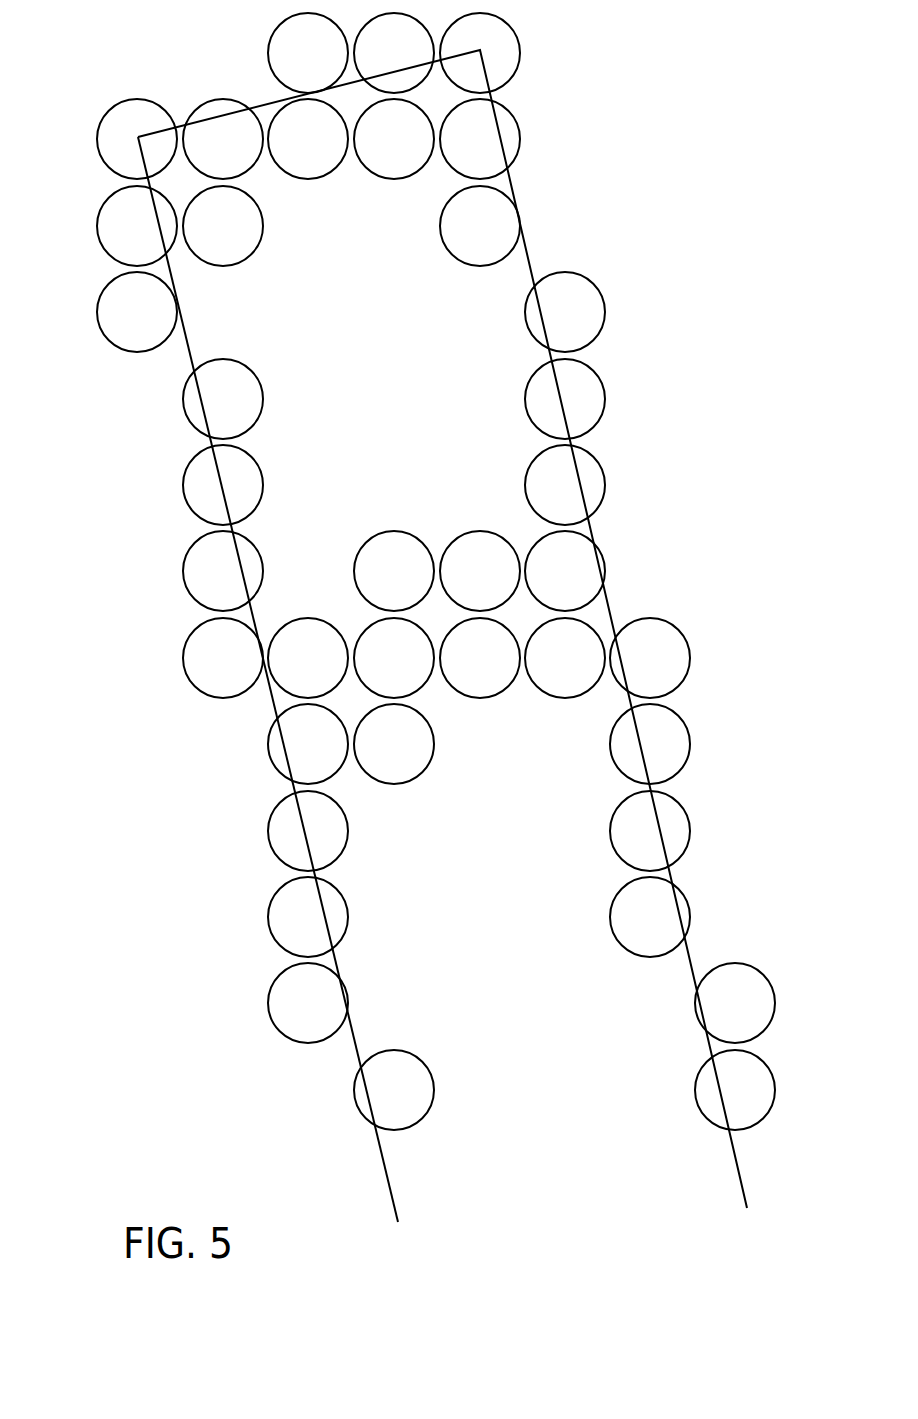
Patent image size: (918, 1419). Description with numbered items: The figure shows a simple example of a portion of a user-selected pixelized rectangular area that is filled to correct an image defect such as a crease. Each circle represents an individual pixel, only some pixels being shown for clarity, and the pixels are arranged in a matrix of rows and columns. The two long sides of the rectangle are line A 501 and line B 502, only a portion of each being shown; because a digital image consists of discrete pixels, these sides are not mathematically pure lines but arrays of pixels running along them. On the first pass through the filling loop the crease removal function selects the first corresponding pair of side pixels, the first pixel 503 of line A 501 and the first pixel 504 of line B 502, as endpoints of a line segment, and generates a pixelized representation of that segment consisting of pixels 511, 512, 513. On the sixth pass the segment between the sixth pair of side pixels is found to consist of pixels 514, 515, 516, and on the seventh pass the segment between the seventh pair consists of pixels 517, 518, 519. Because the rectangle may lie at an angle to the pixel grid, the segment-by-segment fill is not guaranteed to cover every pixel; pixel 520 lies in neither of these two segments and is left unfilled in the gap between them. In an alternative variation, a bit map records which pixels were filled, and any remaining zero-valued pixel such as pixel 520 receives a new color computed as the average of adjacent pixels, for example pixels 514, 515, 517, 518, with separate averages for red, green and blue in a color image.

The line A 501 is at (390, 1200).
The line B 502 is at (738, 1161).
The pixel A1 503 is at (97, 227).
The pixel B1 504 is at (522, 137).
The pixel of line segment A1B1 511 is at (243, 232).
The pixel of line segment A1B1 512 is at (328, 145).
The pixel of line segment A1B1 513 is at (414, 145).
The pixel of line segment A6B6 514 is at (328, 664).
The pixel of line segment A6B6 515 is at (414, 577).
The pixel of line segment A6B6 516 is at (500, 577).
The pixel of line segment A7B7 517 is at (394, 744).
The pixel of line segment A7B7 518 is at (480, 658).
The pixel of line segment A7B7 519 is at (565, 658).
The unfilled pixel 520 is at (414, 664).